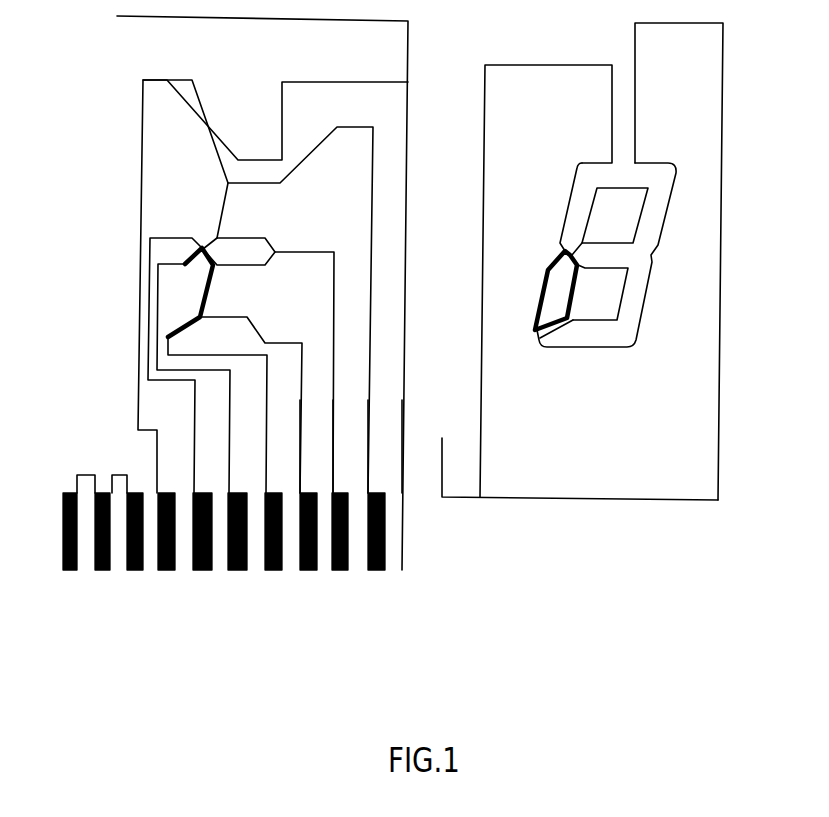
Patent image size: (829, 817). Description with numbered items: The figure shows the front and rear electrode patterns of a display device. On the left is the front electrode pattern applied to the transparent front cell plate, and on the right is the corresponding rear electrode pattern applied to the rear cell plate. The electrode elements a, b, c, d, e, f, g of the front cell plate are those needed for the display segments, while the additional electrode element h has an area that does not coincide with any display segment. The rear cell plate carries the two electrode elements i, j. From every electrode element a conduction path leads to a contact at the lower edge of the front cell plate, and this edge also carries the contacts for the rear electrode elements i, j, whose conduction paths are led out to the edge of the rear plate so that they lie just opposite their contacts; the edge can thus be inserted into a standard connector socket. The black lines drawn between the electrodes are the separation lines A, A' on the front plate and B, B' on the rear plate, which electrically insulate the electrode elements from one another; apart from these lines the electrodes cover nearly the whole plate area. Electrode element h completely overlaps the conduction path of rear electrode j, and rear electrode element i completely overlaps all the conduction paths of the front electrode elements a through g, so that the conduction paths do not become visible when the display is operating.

The electrode element a is at (390, 446).
The electrode element b is at (354, 446).
The electrode element c is at (321, 446).
The electrode element d is at (287, 446).
The electrode element e is at (251, 405).
The electrode element f is at (217, 415).
The electrode element g is at (193, 378).
The additional electrode element h is at (168, 365).
The electrode element i is at (118, 483).
The electrode element j is at (83, 476).
The separation line A is at (243, 235).
The separation line A' is at (205, 292).
The separation line B is at (616, 236).
The separation line B' is at (570, 290).